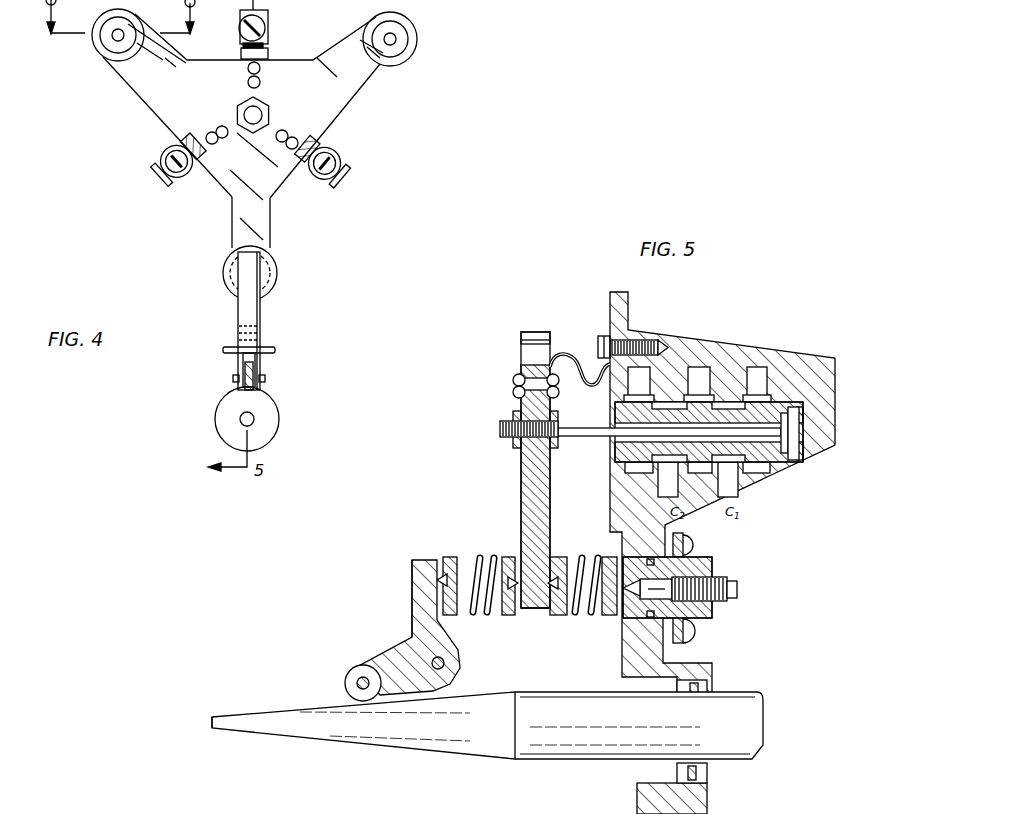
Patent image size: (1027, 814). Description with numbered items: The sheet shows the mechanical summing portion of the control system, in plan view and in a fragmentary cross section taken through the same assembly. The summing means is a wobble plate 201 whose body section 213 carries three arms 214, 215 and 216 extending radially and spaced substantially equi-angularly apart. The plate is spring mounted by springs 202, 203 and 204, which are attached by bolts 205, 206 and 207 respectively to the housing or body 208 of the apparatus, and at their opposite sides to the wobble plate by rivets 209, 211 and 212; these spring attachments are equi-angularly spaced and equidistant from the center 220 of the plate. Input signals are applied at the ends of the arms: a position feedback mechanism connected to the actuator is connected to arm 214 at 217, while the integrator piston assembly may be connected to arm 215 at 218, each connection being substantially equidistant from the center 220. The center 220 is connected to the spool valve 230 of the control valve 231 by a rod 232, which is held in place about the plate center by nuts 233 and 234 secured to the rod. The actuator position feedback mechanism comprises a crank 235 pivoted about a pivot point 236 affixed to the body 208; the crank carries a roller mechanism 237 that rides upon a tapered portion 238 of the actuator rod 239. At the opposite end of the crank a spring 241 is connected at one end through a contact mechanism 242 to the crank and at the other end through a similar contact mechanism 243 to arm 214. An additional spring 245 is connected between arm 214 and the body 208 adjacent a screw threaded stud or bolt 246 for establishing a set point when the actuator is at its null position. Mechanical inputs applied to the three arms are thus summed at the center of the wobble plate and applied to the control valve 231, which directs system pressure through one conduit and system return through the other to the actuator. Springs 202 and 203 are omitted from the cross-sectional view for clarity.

In FIG. 4, the wobble plate 201 is at (340, 103).
In FIG. 5, the wobble plate 201 is at (520, 482).
In FIG. 4, the spring 202 is at (170, 183).
In FIG. 4, the spring 203 is at (312, 180).
In FIG. 4, the spring 204 is at (268, 53).
In FIG. 5, the spring 204 is at (588, 382).
In FIG. 4, the bolt 205 is at (173, 148).
In FIG. 4, the bolt 206 is at (330, 185).
In FIG. 4, the bolt 207 is at (265, 32).
In FIG. 5, the bolt 207 is at (597, 345).
In FIG. 5, the housing or body 208 is at (622, 322).
In FIG. 4, the rivet 209 is at (222, 140).
In FIG. 4, the rivet 211 is at (298, 138).
In FIG. 4, the rivet 212 is at (262, 80).
In FIG. 5, the rivet 212 is at (512, 381).
In FIG. 4, the body section 213 is at (233, 183).
In FIG. 5, the body section 213 is at (520, 514).
In FIG. 4, the arm 214 is at (272, 238).
In FIG. 5, the arm 214 is at (533, 610).
In FIG. 4, the arm 215 is at (340, 50).
In FIG. 4, the arm 216 is at (150, 68).
In FIG. 4, the position feedback connection 217 is at (280, 268).
In FIG. 5, the position feedback connection 217 is at (400, 612).
In FIG. 4, the integrator piston connection 218 is at (418, 50).
In FIG. 4, the center of the wobble plate 220 is at (258, 112).
In FIG. 5, the center of the wobble plate 220 is at (500, 429).
In FIG. 5, the spool valve 230 is at (792, 402).
In FIG. 5, the control valve 231 is at (720, 374).
In FIG. 5, the rod 232 is at (605, 438).
In FIG. 4, the nut 233 is at (240, 102).
In FIG. 5, the nut 233 is at (514, 445).
In FIG. 5, the nut 234 is at (556, 456).
In FIG. 4, the crank 235 is at (237, 320).
In FIG. 5, the crank 235 is at (440, 634).
In FIG. 4, the pivot point 236 is at (278, 350).
In FIG. 5, the pivot point 236 is at (447, 664).
In FIG. 4, the roller mechanism 237 is at (236, 399).
In FIG. 5, the roller mechanism 237 is at (345, 680).
In FIG. 5, the tapered portion 238 is at (312, 700).
In FIG. 4, the actuator rod 239 is at (93, 62).
In FIG. 5, the actuator rod 239 is at (535, 762).
In FIG. 5, the spring 241 is at (471, 565).
In FIG. 5, the contact mechanism 242 is at (430, 581).
In FIG. 5, the contact mechanism 243 is at (518, 615).
In FIG. 5, the spring 245 is at (580, 565).
In FIG. 5, the screw threaded stud or bolt 246 is at (714, 578).